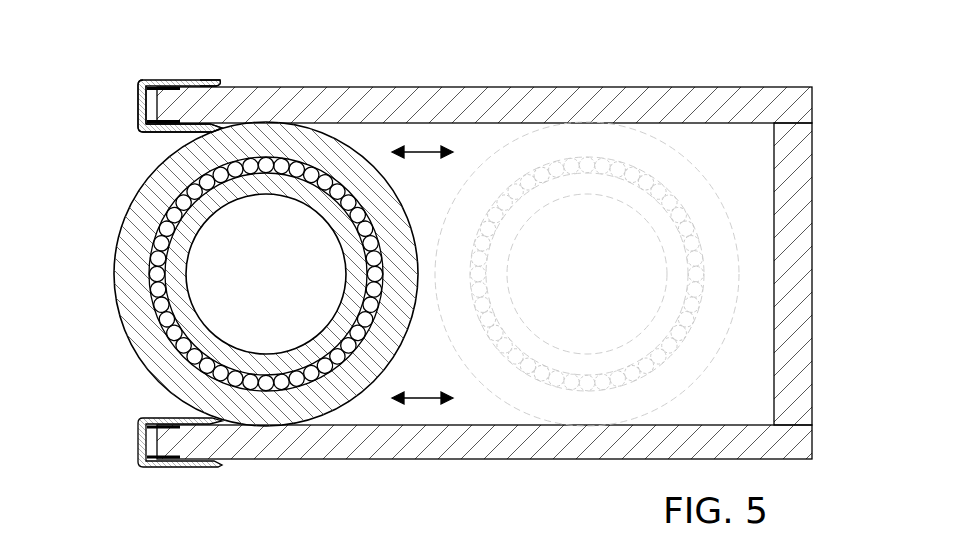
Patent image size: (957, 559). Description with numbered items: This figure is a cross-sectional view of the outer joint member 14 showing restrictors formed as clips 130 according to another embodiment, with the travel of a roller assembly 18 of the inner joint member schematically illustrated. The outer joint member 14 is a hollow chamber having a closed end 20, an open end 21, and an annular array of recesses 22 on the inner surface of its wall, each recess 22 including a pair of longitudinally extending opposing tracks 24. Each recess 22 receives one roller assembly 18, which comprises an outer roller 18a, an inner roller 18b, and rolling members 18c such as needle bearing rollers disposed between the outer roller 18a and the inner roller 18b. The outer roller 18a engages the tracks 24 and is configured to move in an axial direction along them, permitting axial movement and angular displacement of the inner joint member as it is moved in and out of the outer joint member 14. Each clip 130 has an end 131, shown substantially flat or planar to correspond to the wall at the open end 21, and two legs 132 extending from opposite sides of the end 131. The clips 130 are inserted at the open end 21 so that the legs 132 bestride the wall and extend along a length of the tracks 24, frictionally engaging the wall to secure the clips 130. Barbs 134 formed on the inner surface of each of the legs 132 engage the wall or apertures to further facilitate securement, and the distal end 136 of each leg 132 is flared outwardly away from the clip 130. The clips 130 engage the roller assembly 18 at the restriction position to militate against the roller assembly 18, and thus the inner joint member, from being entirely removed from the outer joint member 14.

The outer joint member 14 is at (550, 458).
The closed end 20 is at (812, 446).
The recesses 22 is at (750, 405).
The tracks 24 is at (463, 121).
The roller assembly 18 is at (158, 357).
The outer roller 18a is at (305, 403).
The inner roller 18b is at (315, 350).
The rolling members 18c is at (273, 382).
The clips 130 is at (182, 87).
The distal end 136 is at (215, 85).
The legs 132 is at (193, 87).
The end 131 is at (138, 97).
The barbs 134 is at (175, 125).
The open end 21 is at (152, 442).